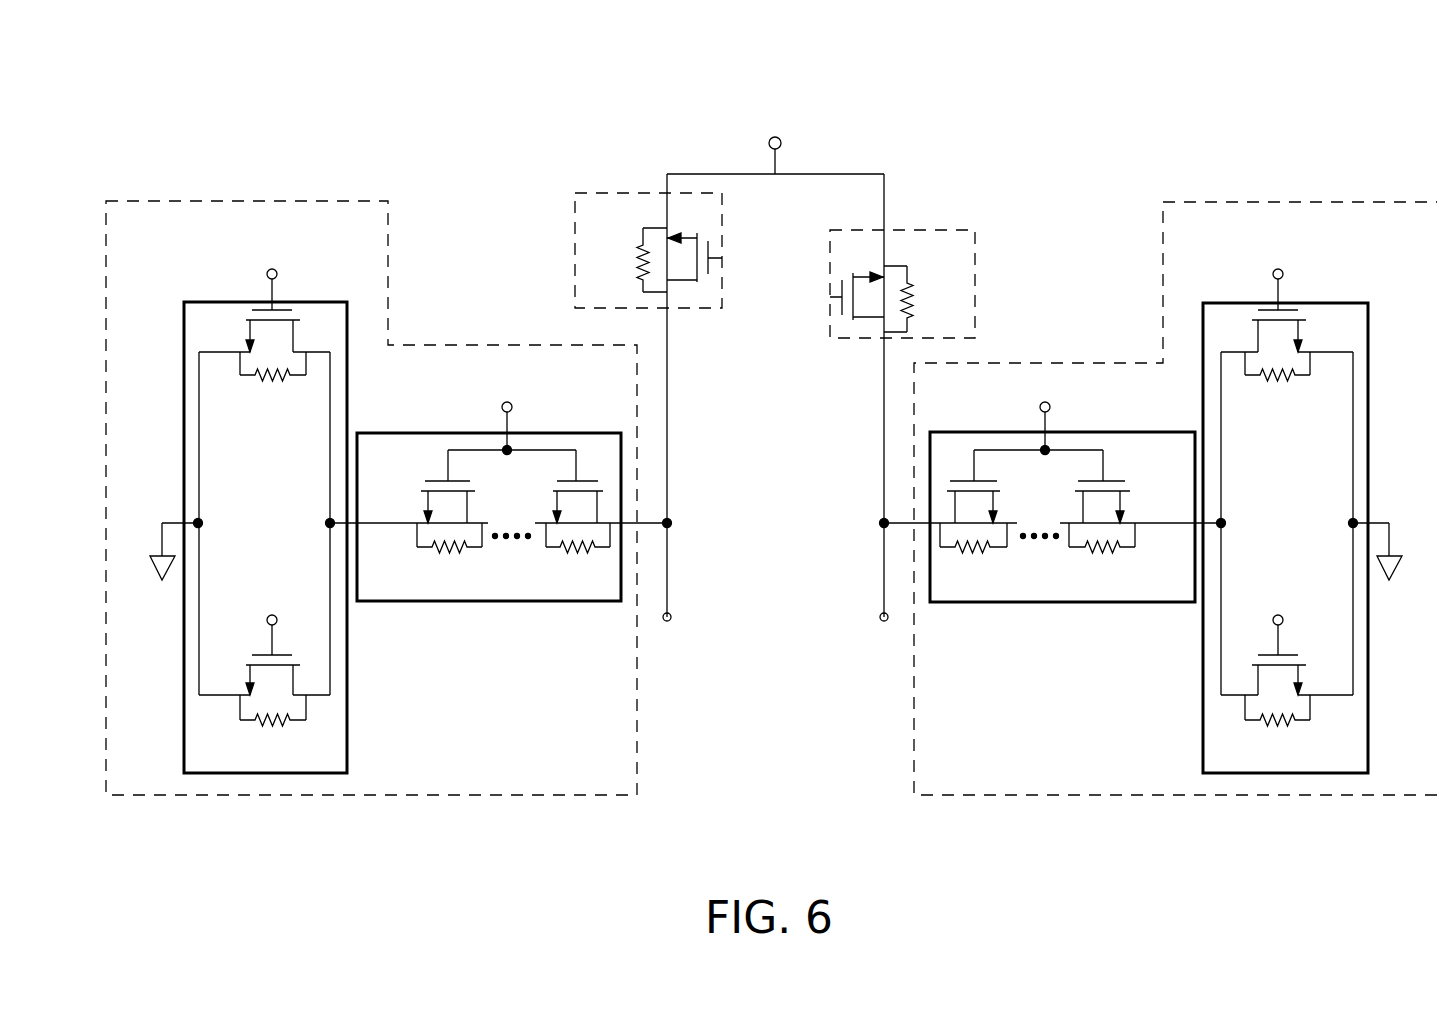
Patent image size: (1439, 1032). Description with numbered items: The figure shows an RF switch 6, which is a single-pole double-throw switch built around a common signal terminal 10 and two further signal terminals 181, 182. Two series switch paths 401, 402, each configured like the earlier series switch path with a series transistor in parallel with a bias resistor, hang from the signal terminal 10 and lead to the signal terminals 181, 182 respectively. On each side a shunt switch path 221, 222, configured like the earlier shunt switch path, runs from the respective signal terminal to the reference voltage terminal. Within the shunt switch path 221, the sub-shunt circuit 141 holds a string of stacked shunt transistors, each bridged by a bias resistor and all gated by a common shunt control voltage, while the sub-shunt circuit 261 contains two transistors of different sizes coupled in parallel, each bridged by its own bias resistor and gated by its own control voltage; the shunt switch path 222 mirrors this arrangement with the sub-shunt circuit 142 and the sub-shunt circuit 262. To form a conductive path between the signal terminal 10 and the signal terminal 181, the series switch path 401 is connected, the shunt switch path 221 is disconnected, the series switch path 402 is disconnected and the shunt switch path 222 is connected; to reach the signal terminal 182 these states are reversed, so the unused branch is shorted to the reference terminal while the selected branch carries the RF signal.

The RF switch 6 is at (1127, 92).
The signal terminal 10 is at (776, 136).
The shunt switch path 221 is at (248, 201).
The shunt switch path 222 is at (1302, 202).
The series switch path 401 is at (612, 193).
The series switch path 402 is at (938, 230).
The first sharing circuit 141 is at (490, 603).
The second sharing circuit 142 is at (1063, 603).
The signal terminal 181 is at (667, 621).
The signal terminal 182 is at (884, 621).
The first switch circuit 261 is at (267, 775).
The second switch circuit 262 is at (1283, 775).